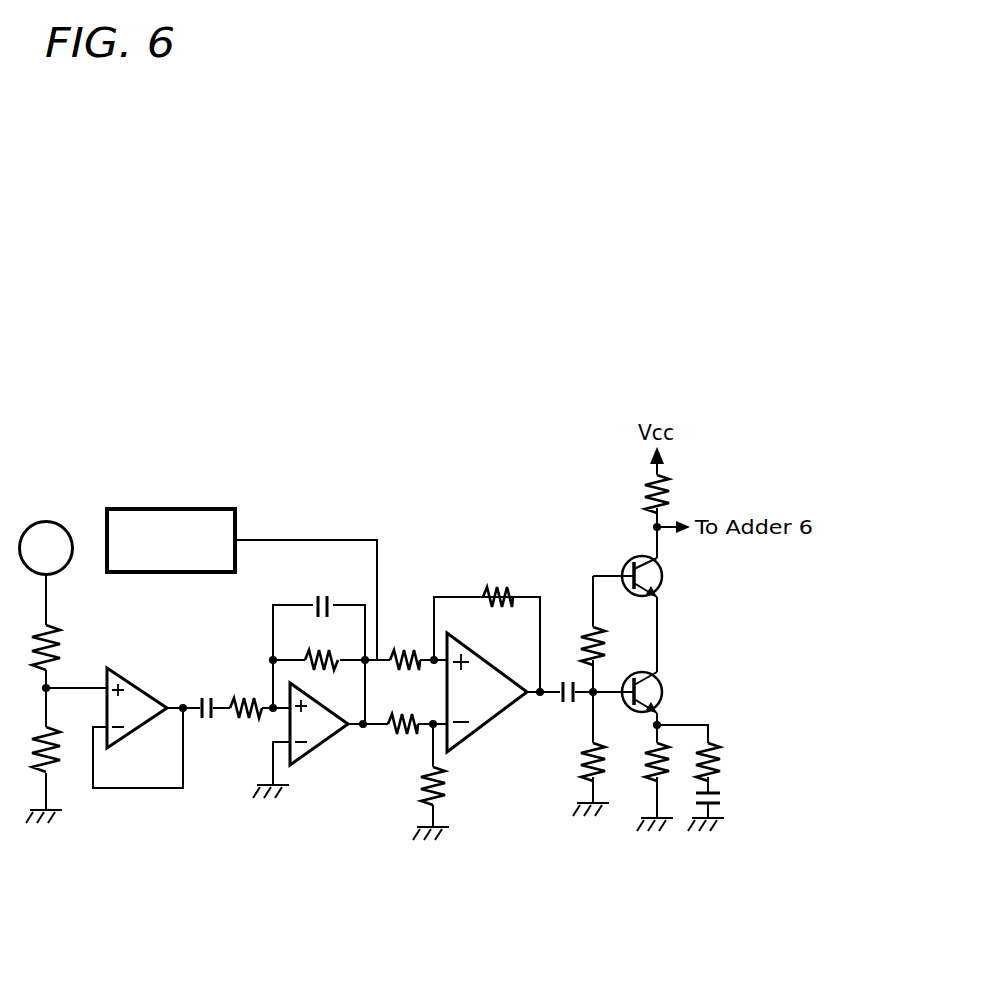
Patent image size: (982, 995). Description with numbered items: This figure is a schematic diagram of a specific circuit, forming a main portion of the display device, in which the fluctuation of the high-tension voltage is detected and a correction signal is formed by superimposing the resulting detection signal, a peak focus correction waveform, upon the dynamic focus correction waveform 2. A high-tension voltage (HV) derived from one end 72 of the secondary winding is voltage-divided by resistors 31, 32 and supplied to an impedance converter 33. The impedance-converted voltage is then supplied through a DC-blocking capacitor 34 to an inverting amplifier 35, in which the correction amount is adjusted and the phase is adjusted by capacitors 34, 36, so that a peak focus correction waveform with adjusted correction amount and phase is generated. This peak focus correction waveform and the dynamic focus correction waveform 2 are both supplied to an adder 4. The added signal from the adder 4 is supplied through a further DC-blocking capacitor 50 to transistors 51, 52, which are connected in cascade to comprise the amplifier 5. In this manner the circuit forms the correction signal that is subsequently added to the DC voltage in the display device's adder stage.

The one end of the secondary winding 72 is at (46, 519).
The resistor 31 is at (62, 641).
The resistor 32 is at (62, 741).
The impedance converter 33 is at (141, 686).
The DC-blocking capacitor 34 is at (201, 722).
The inverting amplifier 35 is at (318, 748).
The capacitor 36 is at (325, 592).
The dynamic focus correction waveform 2 is at (242, 519).
The adder 4 is at (475, 731).
The DC-blocking capacitor 50 is at (563, 713).
The transistor 52 is at (665, 575).
The transistor 51 is at (667, 691).
The amplifier 5 is at (666, 631).